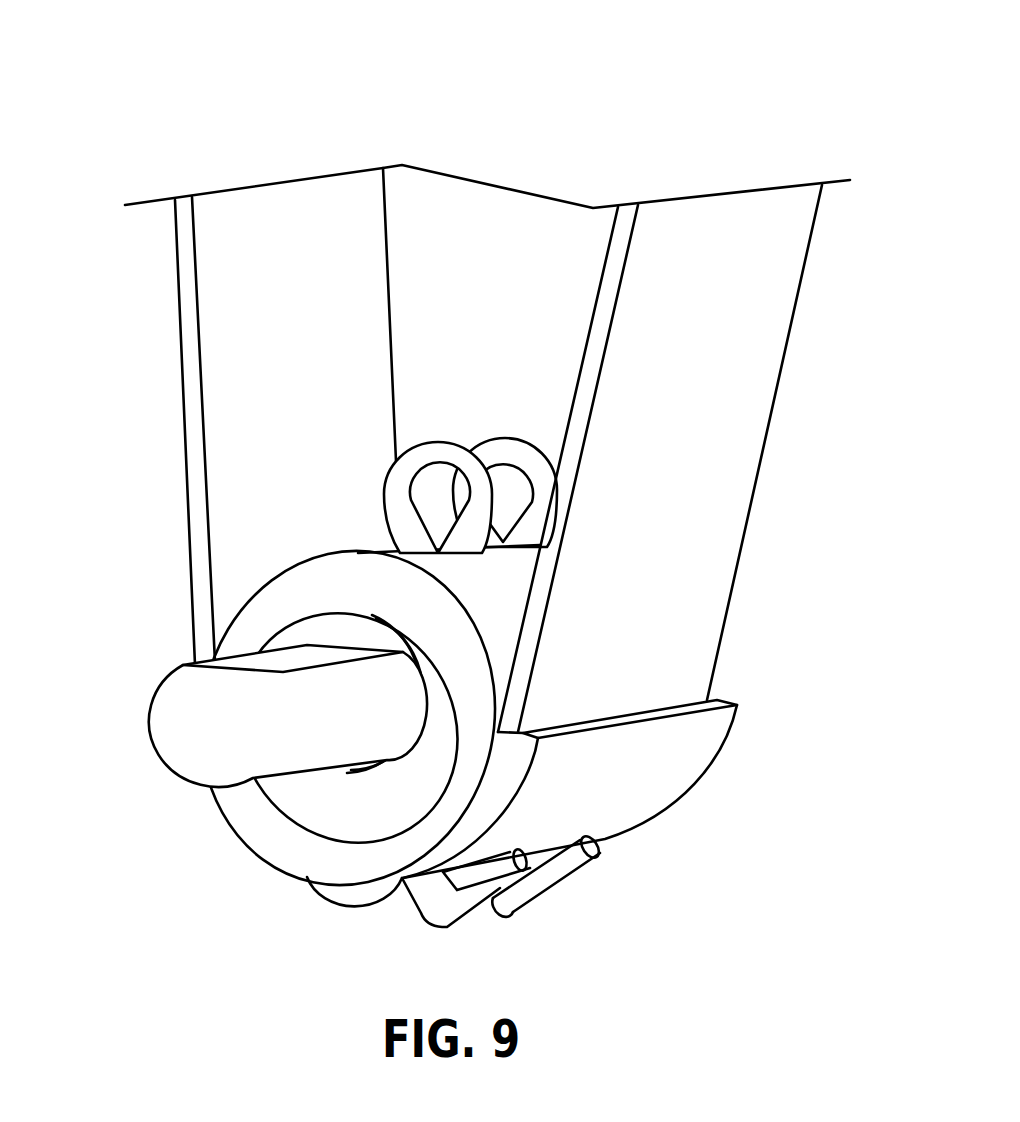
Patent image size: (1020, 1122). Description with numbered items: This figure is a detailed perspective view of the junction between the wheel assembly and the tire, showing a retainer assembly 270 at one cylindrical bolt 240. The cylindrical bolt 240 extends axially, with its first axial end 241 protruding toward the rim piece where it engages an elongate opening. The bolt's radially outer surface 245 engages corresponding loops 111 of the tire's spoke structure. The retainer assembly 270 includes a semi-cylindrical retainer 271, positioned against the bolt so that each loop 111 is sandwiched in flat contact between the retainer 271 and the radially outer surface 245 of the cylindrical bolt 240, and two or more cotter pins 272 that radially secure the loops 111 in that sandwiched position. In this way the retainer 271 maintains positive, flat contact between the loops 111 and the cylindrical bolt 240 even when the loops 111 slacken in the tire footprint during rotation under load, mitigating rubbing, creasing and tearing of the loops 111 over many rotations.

The retainer assembly 270 is at (466, 507).
The loops 111 is at (232, 420).
The cotter pins 272 is at (497, 443).
The radially outer surface 245 is at (262, 577).
The cylindrical bolt 240 is at (478, 717).
The first axial end 241 is at (223, 740).
The semi-cylindrical retainer 271 is at (613, 777).